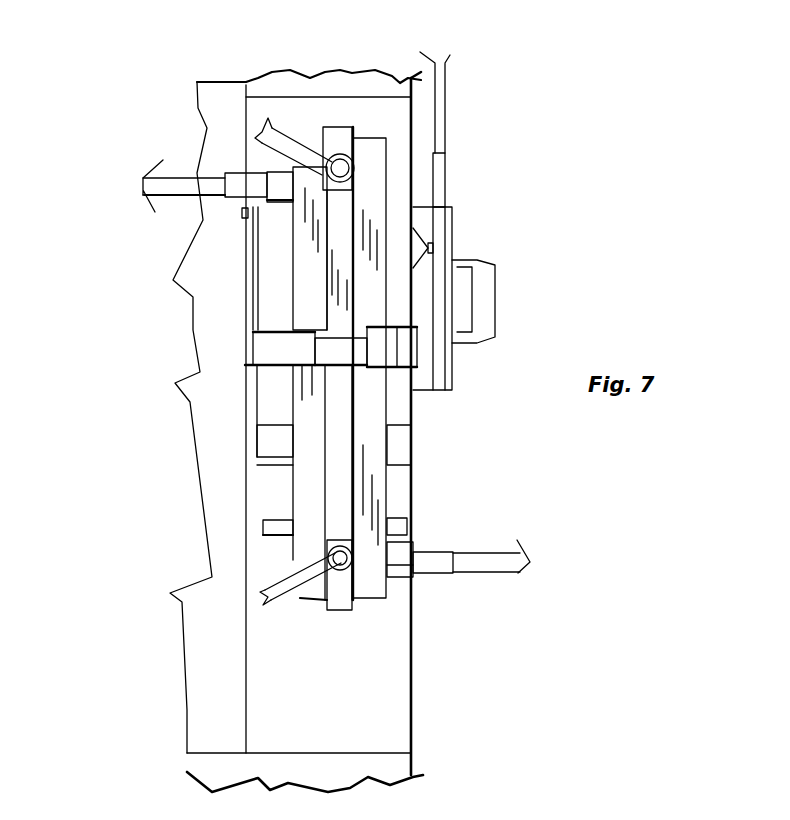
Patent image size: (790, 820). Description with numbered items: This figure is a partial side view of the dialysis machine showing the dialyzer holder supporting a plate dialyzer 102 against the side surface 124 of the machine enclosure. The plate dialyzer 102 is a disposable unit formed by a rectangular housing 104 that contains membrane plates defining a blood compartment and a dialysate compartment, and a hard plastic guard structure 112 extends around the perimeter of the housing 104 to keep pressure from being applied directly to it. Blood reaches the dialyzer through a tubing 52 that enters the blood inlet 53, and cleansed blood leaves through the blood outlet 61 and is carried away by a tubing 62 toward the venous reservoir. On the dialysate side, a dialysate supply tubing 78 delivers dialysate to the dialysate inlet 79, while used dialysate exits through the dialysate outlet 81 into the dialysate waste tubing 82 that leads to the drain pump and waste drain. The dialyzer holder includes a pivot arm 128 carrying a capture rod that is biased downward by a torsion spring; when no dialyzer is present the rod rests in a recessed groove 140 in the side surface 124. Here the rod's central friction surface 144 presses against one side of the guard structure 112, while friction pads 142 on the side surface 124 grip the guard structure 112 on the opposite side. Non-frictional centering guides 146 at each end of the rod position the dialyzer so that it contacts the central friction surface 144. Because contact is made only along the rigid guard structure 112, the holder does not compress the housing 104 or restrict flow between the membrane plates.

The tubing 52 is at (272, 125).
The blood inlet 53 is at (358, 137).
The blood outlet 61 is at (343, 580).
The tubing 62 is at (280, 598).
The dialysate supply tubing 78 is at (500, 574).
The dialysate inlet 79 is at (398, 578).
The dialysate outlet 81 is at (275, 180).
The dialysate waste tubing 82 is at (177, 185).
The plate dialyzer 102 is at (392, 178).
The rectangular housing 104 is at (310, 276).
The guard structure 112 is at (340, 528).
The side surface 124 is at (332, 731).
The pivot arm 128 is at (247, 312).
The recessed groove 140 is at (400, 446).
The friction pads 142 is at (278, 535).
The central friction surface 144 is at (343, 352).
The centering guides 146 is at (273, 372).